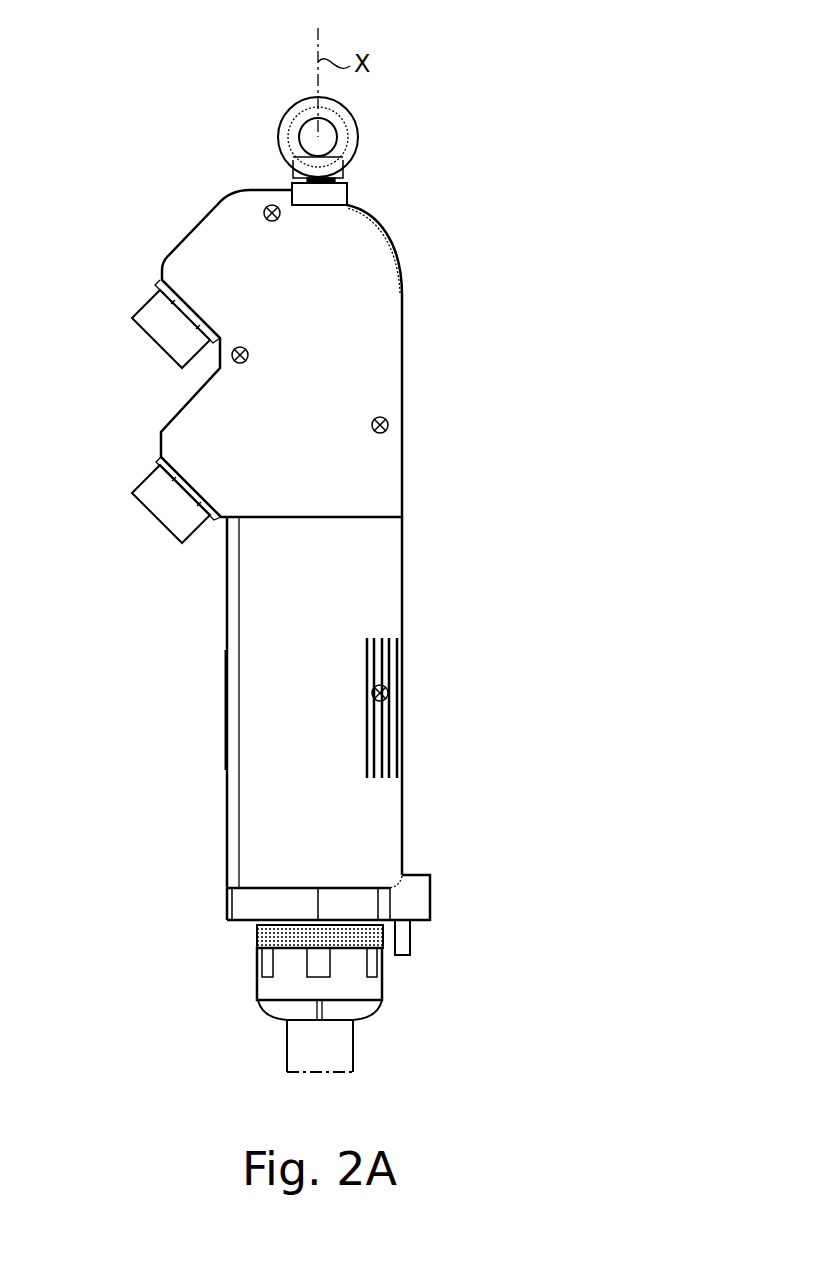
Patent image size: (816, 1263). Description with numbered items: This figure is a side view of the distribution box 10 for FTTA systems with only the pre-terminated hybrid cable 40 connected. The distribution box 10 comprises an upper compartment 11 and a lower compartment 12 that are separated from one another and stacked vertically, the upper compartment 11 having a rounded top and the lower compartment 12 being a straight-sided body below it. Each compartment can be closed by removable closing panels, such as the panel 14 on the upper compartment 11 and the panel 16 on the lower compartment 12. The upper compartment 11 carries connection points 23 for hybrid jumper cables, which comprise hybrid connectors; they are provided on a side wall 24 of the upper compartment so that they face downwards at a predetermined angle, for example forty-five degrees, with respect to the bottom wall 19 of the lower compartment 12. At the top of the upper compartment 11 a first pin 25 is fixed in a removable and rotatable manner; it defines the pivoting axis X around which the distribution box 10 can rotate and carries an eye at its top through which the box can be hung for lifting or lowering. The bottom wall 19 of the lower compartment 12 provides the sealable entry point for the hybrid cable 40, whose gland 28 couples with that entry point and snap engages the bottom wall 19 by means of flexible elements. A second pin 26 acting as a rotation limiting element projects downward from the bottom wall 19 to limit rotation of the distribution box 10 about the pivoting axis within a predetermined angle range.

The distribution box 10 is at (455, 135).
The upper compartment 11 is at (408, 313).
The lower compartment 12 is at (410, 622).
The closing removable panel 14 is at (370, 272).
The closing removable panel 16 is at (278, 705).
The bottom wall 19 is at (237, 925).
The connection point 23 is at (148, 340).
The side wall 24 is at (162, 258).
The first pin 25 is at (333, 179).
The second pin 26 is at (410, 945).
The gland 28 is at (373, 985).
The hybrid cable 40 is at (322, 1047).